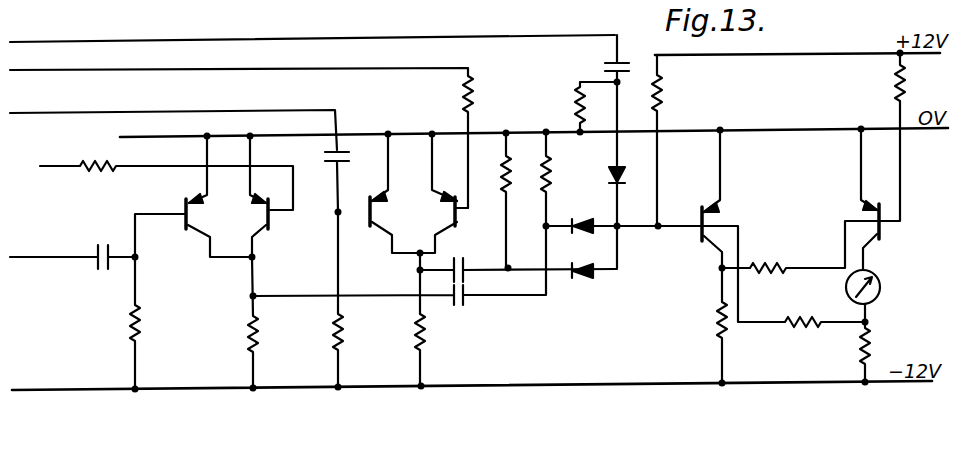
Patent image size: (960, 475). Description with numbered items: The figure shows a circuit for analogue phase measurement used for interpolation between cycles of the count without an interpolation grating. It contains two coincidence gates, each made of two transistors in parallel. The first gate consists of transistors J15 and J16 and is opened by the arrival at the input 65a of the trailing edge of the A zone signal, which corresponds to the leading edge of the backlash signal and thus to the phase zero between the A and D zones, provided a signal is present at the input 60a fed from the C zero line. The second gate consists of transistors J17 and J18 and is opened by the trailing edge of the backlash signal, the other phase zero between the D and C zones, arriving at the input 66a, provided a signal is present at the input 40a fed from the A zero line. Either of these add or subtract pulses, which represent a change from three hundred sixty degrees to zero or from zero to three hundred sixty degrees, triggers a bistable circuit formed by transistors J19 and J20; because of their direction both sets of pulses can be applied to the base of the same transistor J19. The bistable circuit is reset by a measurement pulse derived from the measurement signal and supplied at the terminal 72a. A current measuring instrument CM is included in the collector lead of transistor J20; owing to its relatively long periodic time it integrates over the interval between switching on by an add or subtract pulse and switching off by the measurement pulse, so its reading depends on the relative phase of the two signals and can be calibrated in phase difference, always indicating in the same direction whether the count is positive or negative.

The terminal 72a is at (56, 42).
The A0a input 40a is at (60, 70).
The 66a input 66a is at (68, 113).
The C0a input 60a is at (66, 170).
The 65a input 65a is at (66, 262).
The transistor J15 is at (183, 213).
The transistor J16 is at (265, 211).
The transistor J17 is at (374, 192).
The transistor J18 is at (453, 211).
The transistor J19 is at (700, 229).
The transistor J20 is at (882, 225).
The current measuring instrument CM is at (877, 296).